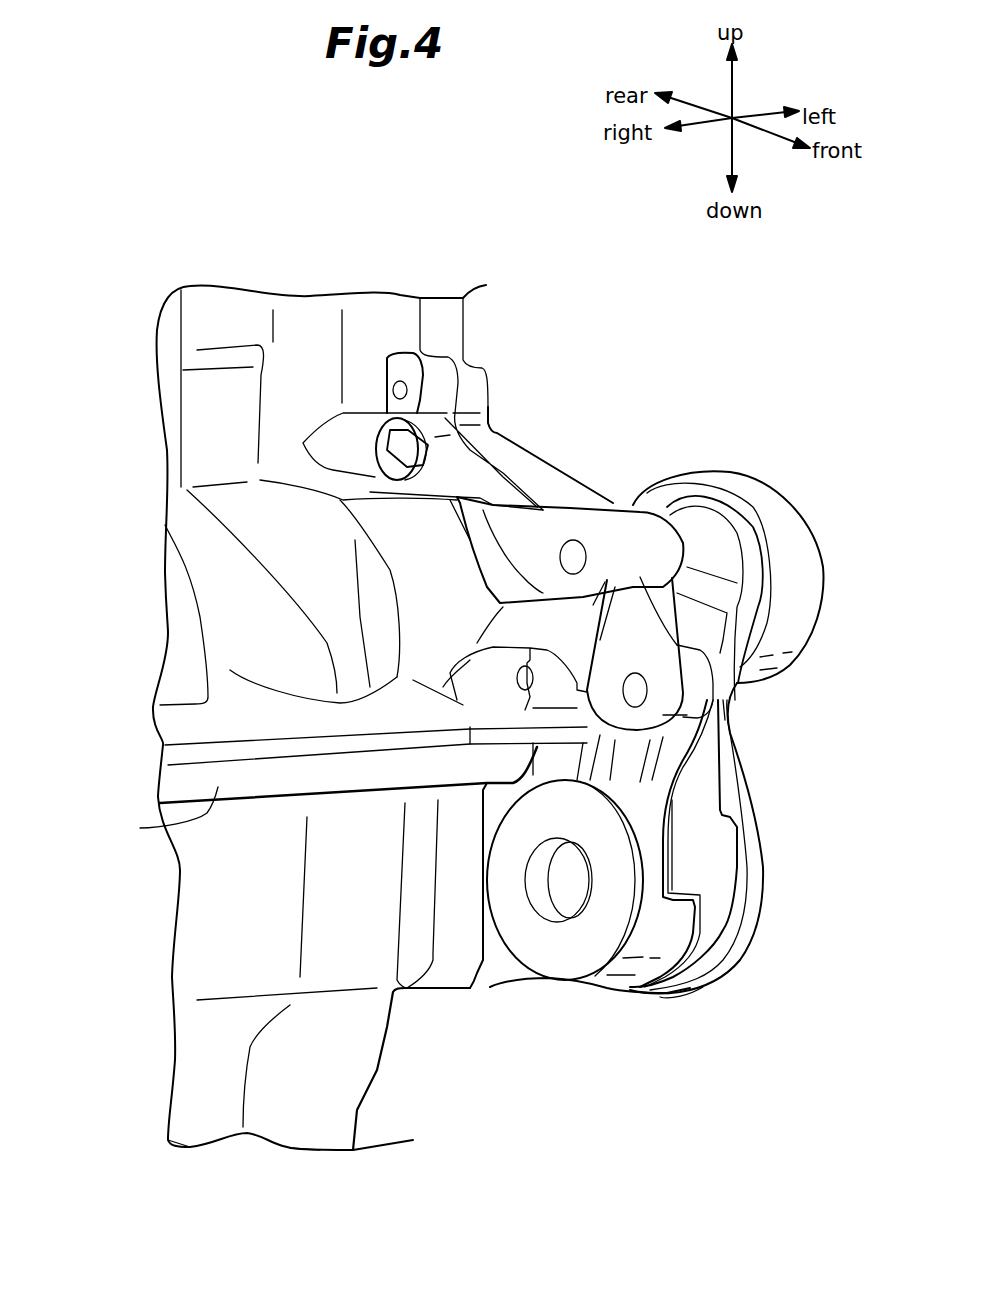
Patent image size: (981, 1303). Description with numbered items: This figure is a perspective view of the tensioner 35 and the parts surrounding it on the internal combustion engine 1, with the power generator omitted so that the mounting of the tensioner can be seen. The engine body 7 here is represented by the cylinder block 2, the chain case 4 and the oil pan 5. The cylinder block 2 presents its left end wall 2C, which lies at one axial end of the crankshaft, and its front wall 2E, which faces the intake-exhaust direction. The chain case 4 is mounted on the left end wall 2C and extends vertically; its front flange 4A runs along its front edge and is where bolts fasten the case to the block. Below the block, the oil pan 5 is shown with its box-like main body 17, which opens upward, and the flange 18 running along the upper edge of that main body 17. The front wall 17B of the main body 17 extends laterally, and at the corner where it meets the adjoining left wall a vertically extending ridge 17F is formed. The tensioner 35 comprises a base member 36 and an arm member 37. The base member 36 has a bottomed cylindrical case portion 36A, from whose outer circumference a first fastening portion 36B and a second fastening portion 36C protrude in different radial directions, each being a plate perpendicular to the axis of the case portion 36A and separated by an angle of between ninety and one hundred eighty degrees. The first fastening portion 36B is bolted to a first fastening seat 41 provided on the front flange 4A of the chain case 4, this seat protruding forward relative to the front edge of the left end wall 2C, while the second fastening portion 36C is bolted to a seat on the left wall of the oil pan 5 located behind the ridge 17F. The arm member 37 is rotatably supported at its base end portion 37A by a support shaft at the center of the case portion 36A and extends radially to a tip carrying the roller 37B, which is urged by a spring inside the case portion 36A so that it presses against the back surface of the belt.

The internal combustion engine 1 is at (358, 216).
The cylinder block 2 is at (166, 631).
The left end wall 2C is at (420, 324).
The front wall 2E is at (193, 417).
The chain case 4 is at (484, 361).
The front flange 4A is at (508, 445).
The oil pan 5 is at (299, 1150).
The engine body 7 is at (174, 1151).
The main body 17 is at (195, 1090).
The front wall 17B is at (193, 1017).
The ridge 17F is at (492, 975).
The flange 18 is at (222, 790).
The tensioner 35 is at (718, 985).
The base member 36 is at (738, 824).
The case portion 36A is at (630, 975).
The first fastening portion 36B is at (700, 720).
The second fastening portion 36C is at (513, 975).
The arm member 37 is at (747, 772).
The base end portion 37A is at (757, 903).
The roller 37B is at (782, 497).
The first fastening seat 41 is at (683, 690).